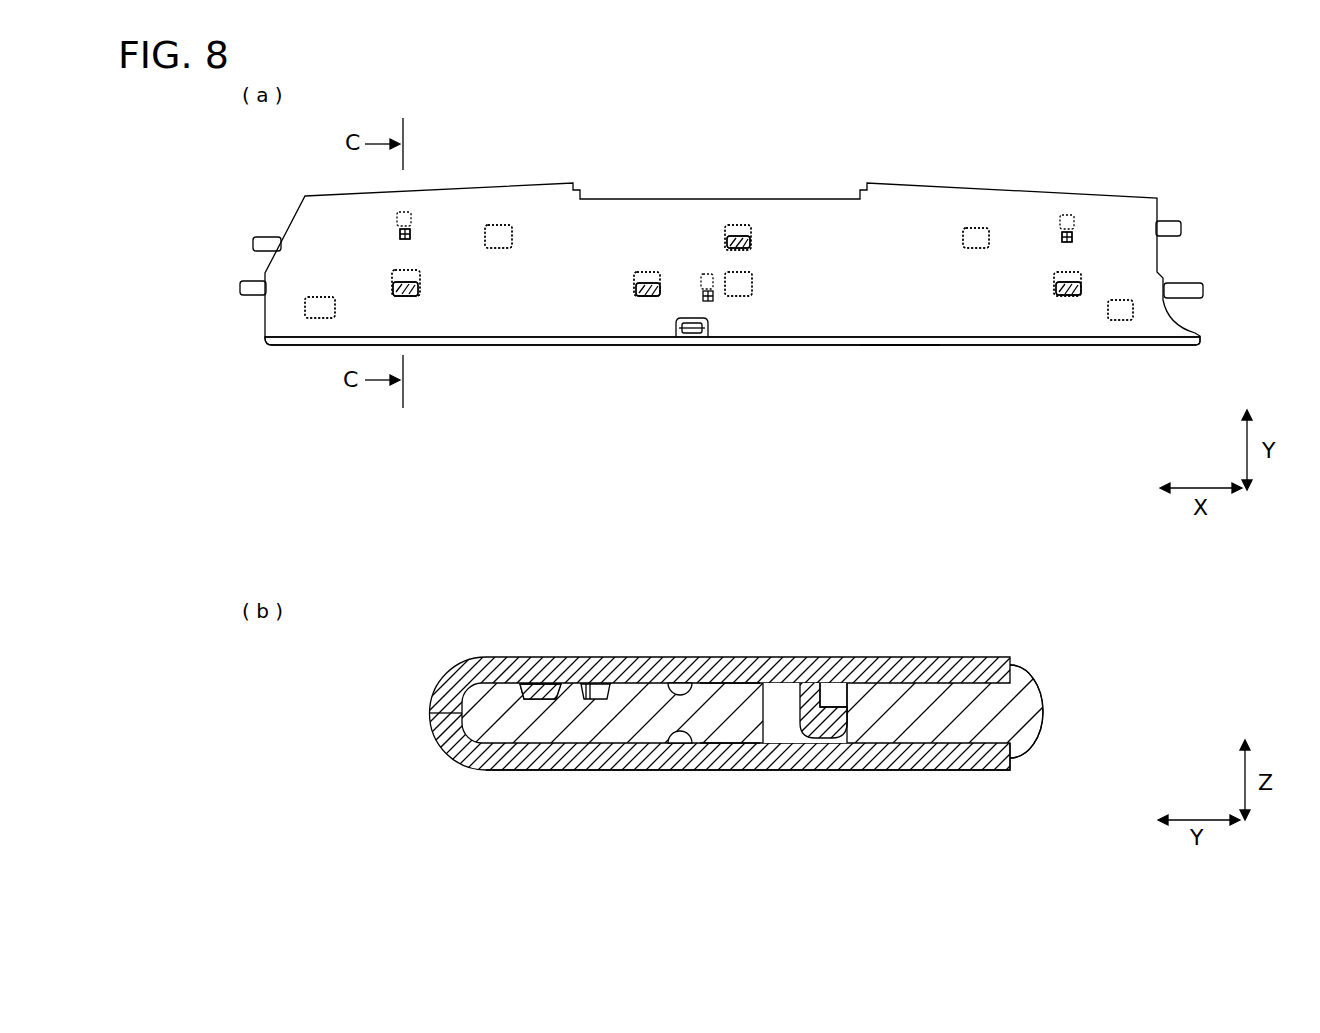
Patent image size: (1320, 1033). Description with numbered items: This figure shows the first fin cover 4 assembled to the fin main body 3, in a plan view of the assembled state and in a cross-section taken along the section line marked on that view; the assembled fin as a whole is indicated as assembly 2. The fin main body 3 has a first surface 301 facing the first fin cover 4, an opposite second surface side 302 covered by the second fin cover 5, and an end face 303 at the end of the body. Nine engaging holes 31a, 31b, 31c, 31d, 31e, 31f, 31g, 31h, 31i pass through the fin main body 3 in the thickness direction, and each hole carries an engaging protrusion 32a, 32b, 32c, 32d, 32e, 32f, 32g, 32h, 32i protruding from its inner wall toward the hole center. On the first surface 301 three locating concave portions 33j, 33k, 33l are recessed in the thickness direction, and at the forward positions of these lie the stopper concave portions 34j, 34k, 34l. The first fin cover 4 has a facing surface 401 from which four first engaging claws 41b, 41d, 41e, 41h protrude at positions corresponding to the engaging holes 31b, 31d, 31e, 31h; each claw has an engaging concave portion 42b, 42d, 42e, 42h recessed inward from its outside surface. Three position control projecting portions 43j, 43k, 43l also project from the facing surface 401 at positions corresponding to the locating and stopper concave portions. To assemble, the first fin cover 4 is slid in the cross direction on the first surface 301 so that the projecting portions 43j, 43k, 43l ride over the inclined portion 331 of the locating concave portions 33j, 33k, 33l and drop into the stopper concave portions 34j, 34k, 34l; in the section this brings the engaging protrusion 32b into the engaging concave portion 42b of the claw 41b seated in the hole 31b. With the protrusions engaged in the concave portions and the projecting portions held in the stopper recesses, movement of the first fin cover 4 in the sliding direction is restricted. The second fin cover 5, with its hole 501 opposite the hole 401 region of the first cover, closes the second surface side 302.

The battery pack 2 is at (370, 428).
The fin main body 3 is at (935, 341).
The first fin cover 4 is at (276, 310).
The second fin cover 5 is at (980, 757).
The first surface 301 is at (745, 688).
The second surface side 302 is at (722, 745).
The end face of main body 303 is at (895, 346).
The inclined portion 331 is at (553, 688).
The facing surface 401 is at (679, 688).
The hole in lower cover 501 is at (680, 735).
The engaging hole 31a is at (307, 312).
The engaging hole 31b is at (420, 276).
The engaging hole 31c is at (498, 226).
The engaging hole 31d is at (650, 272).
The engaging hole 31e is at (737, 228).
The engaging hole 31f is at (752, 280).
The engaging hole 31g is at (968, 230).
The engaging hole 31h is at (1054, 285).
The engaging hole 31i is at (1130, 306).
The engaging protrusion 32a is at (319, 318).
The engaging protrusion 32b is at (410, 298).
The engaging protrusion 32c is at (498, 250).
The engaging protrusion 32d is at (652, 297).
The engaging protrusion 32e is at (744, 248).
The engaging protrusion 32f is at (738, 297).
The engaging protrusion 32g is at (977, 246).
The engaging protrusion 32h is at (1075, 296).
The engaging protrusion 32i is at (1120, 320).
The locating concave portion 33j is at (404, 212).
The locating concave portion 33k is at (706, 276).
The locating concave portion 33l is at (1063, 218).
The stopper concave portion 34j is at (402, 236).
The stopper concave portion 34k is at (691, 345).
The stopper concave portion 34l is at (1074, 236).
The first engaging claw 41b is at (392, 287).
The first engaging claw 41d is at (632, 286).
The first engaging claw 41e is at (727, 243).
The first engaging claw 41h is at (1065, 296).
The engaging concave portion 42b is at (403, 298).
The engaging concave portion 42d is at (645, 297).
The engaging concave portion 42e is at (750, 243).
The engaging concave portion 42h is at (1068, 296).
The position control projecting portion 43j is at (410, 236).
The position control projecting portion 43k is at (707, 302).
The position control projecting portion 43l is at (1073, 226).